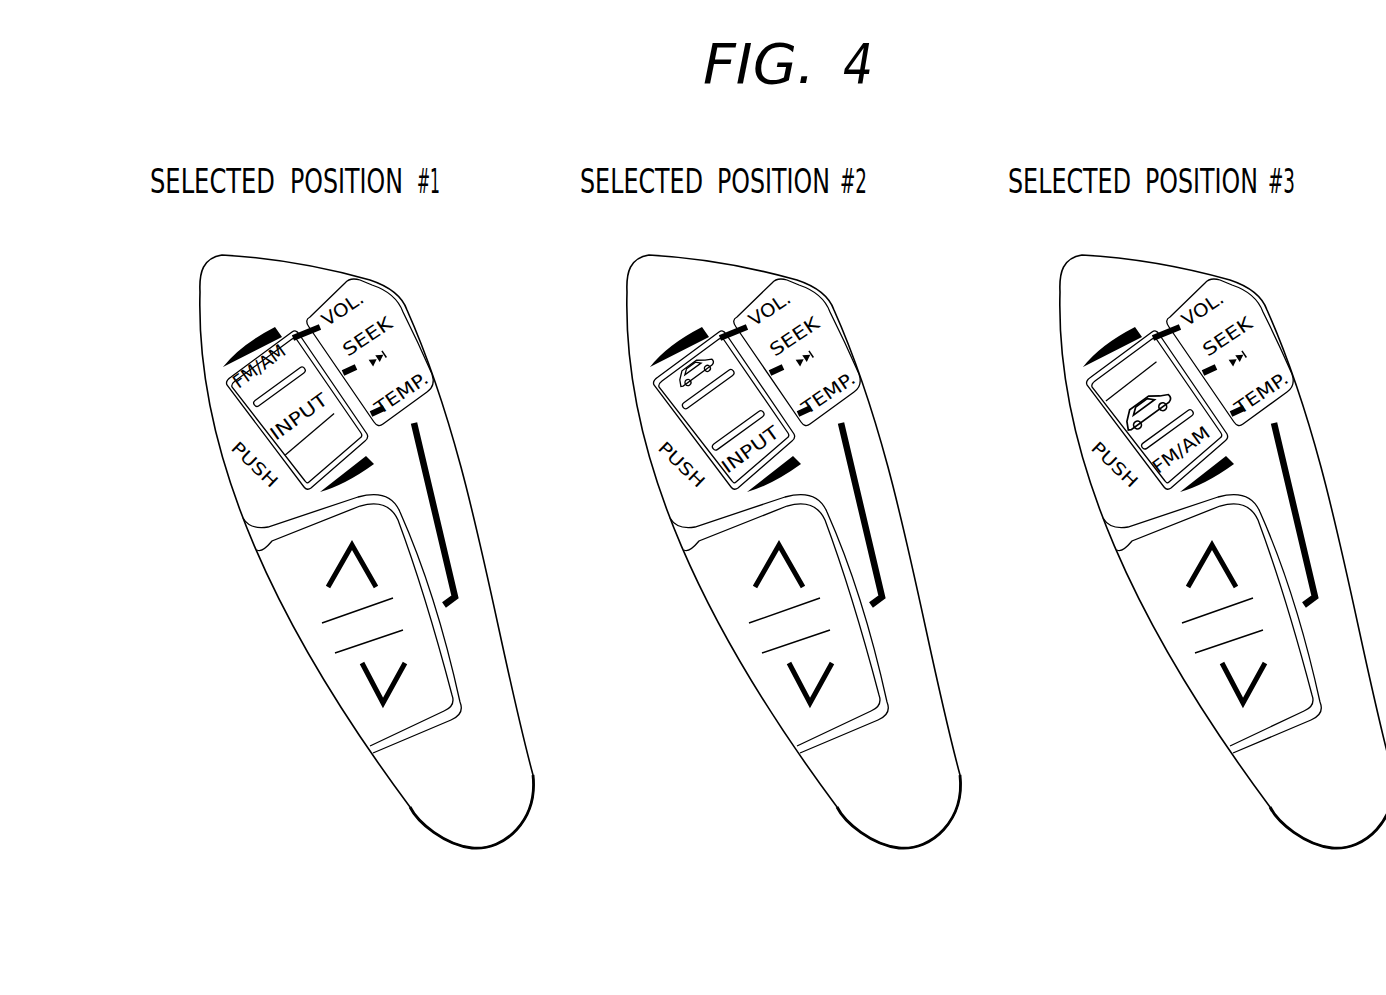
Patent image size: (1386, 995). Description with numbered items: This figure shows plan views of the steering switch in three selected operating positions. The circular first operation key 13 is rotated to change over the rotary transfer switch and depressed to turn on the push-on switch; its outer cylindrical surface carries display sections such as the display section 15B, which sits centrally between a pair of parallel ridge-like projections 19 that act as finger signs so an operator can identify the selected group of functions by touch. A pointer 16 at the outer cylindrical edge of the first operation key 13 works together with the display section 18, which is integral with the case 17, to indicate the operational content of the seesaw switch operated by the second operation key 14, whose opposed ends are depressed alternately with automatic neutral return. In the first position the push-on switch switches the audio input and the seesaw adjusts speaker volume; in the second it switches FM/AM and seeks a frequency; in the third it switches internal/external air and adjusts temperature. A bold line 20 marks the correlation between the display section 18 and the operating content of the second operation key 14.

The first operation key 13 is at (724, 459).
The second operation key 14 is at (760, 624).
The display section 15B is at (641, 442).
The pointer 16 is at (834, 370).
The case 17 is at (794, 585).
The display section 18 is at (807, 329).
The ridge-like projections 19 is at (634, 377).
The bold line 20 is at (905, 514).